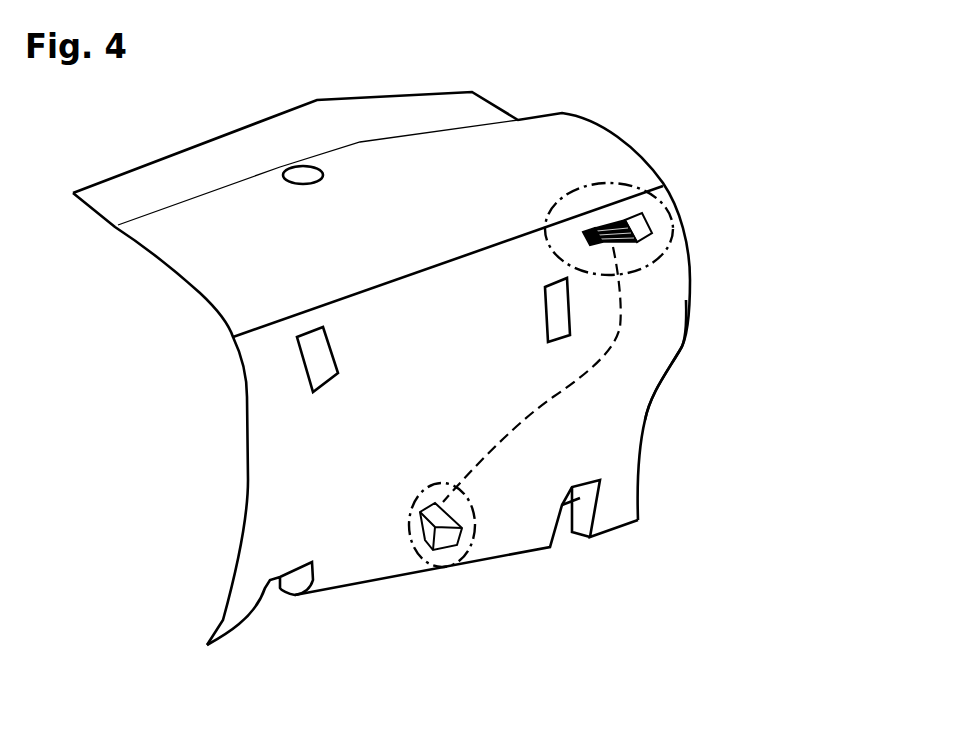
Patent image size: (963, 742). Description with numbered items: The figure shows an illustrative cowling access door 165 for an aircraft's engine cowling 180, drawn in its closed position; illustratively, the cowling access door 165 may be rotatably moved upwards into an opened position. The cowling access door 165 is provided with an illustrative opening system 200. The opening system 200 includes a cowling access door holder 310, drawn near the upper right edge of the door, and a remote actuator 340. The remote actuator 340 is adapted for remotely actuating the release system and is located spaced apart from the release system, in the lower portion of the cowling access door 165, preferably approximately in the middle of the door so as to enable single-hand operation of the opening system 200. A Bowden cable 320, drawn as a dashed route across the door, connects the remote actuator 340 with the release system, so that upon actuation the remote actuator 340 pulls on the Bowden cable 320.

The engine cowling 180 is at (650, 104).
The cowling access door 165 is at (708, 310).
The opening system 200 is at (685, 402).
The cowling access door holder 310 is at (667, 222).
The Bowden cable 320 is at (620, 327).
The remote actuator 340 is at (470, 563).